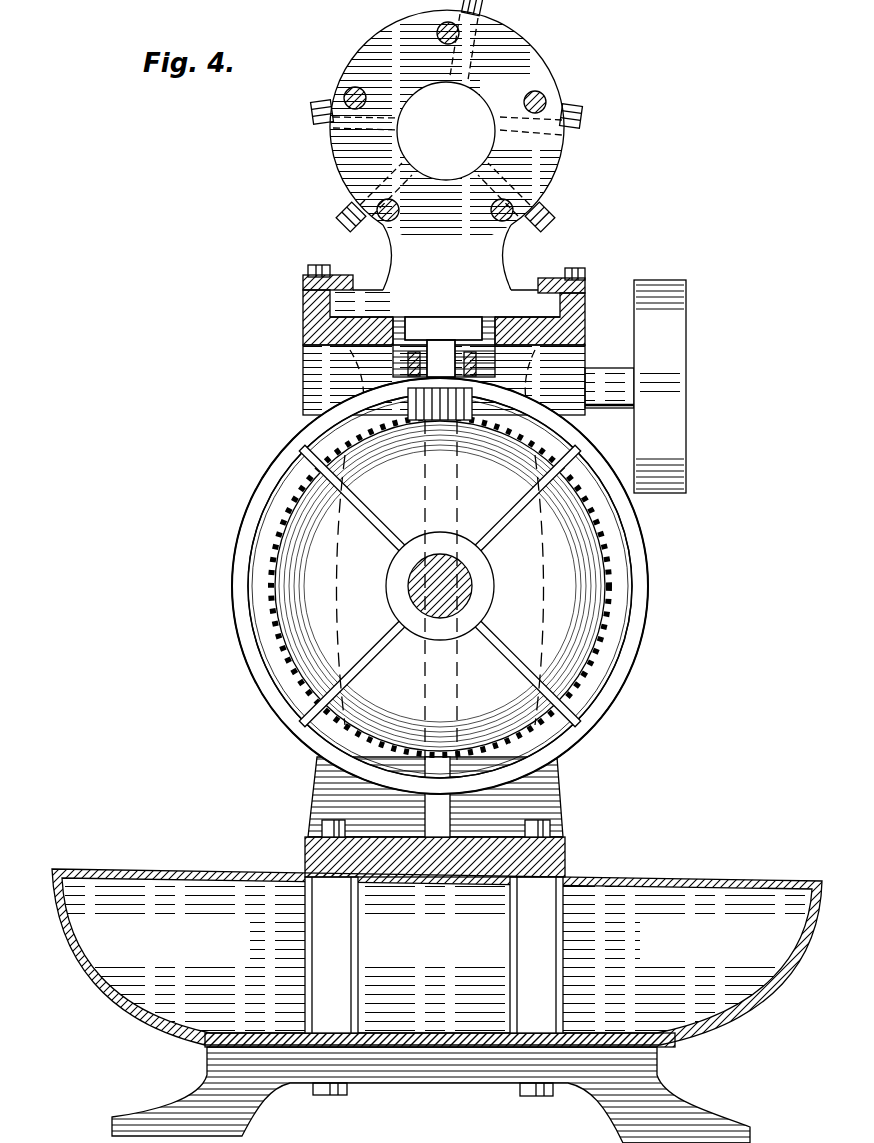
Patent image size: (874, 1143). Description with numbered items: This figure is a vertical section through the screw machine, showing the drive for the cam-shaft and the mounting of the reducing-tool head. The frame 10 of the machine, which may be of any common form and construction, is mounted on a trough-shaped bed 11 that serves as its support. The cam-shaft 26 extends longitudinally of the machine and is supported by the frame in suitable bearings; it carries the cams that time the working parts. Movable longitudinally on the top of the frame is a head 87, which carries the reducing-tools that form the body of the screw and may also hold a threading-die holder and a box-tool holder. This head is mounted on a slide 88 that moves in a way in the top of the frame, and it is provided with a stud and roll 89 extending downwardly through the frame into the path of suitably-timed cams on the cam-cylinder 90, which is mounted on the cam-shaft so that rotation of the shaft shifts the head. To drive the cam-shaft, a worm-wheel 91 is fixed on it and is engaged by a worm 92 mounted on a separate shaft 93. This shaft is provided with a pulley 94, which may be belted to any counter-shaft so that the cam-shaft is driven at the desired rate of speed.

The frame 10 is at (302, 322).
The trough-shaped bed 11 is at (437, 1006).
The cam-shaft 26 is at (472, 590).
The head 87 is at (447, 145).
The slide 88 is at (467, 318).
The stud and roll 89 is at (455, 335).
The cam-cylinder 90 is at (650, 563).
The worm-wheel 91 is at (440, 590).
The worm 92 is at (466, 422).
The shaft 93 is at (618, 367).
The pulley 94 is at (660, 386).